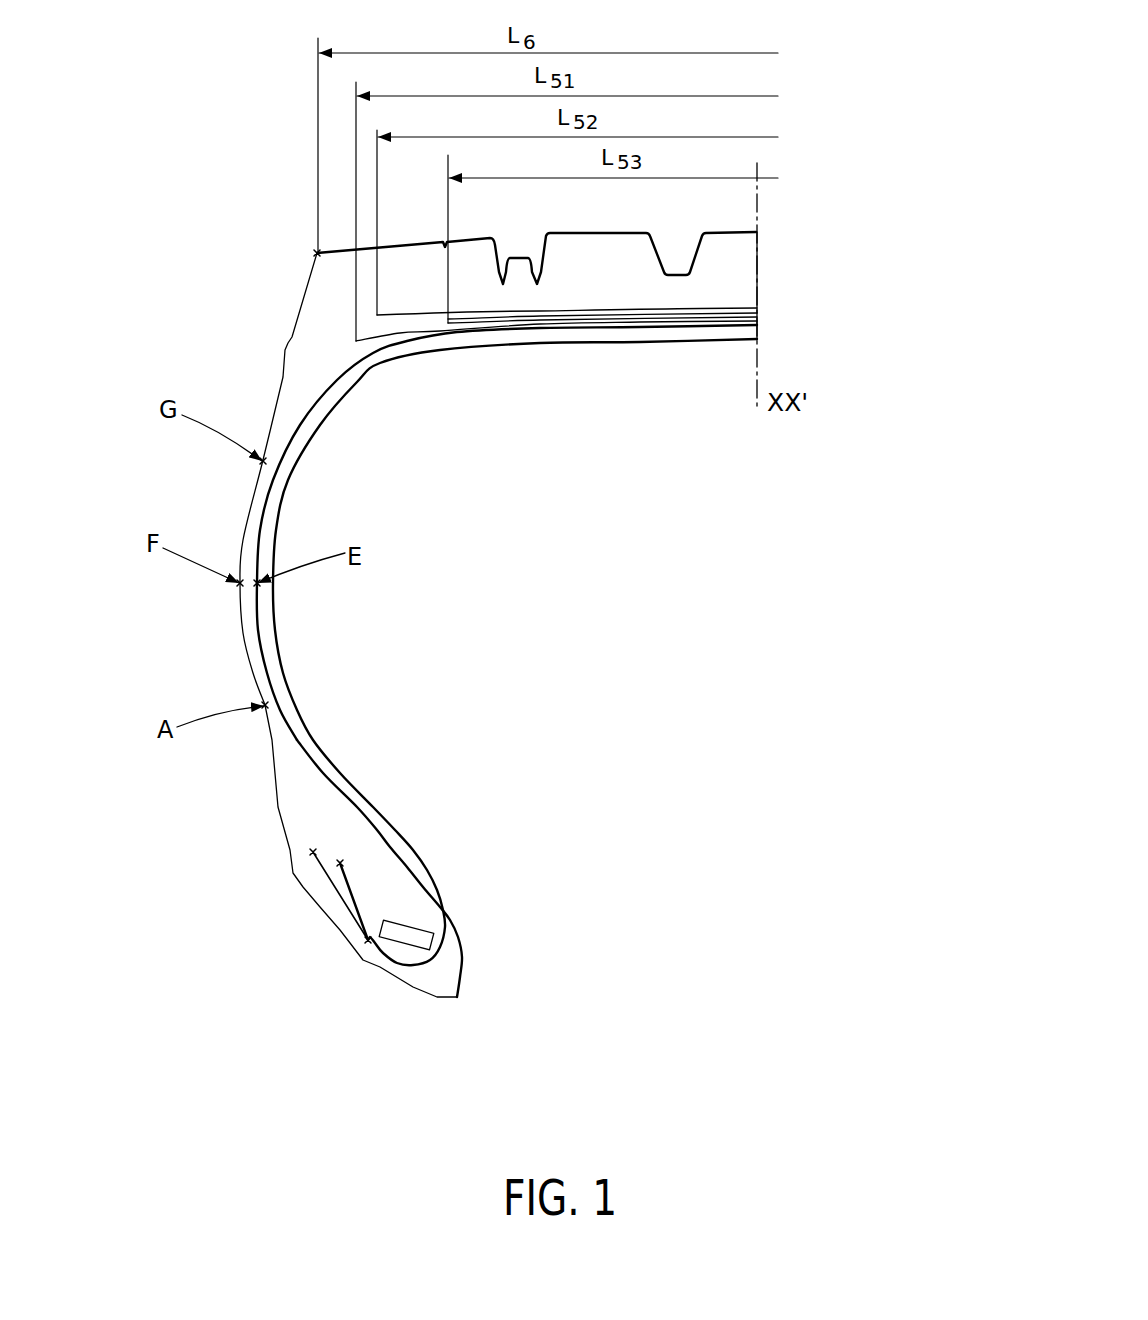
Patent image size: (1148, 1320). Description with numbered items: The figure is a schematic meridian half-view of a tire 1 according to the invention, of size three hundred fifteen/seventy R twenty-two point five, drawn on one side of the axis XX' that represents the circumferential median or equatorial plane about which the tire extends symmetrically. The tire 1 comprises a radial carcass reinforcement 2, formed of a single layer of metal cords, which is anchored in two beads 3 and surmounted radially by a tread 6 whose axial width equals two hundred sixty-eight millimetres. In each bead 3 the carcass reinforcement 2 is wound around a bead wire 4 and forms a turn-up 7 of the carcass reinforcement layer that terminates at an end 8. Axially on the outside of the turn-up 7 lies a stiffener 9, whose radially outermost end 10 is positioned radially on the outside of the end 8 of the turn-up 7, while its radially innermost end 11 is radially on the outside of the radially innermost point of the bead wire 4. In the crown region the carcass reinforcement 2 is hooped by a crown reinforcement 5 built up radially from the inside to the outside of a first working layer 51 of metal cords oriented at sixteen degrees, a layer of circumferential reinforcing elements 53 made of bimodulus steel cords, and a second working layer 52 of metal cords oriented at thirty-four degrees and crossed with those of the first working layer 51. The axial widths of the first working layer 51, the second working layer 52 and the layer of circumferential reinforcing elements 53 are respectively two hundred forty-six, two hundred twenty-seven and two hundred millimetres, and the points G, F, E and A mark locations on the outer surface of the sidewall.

The tire 1 is at (308, 353).
The carcass reinforcement 2 is at (458, 335).
The bead 3 is at (398, 889).
The bead wire 4 is at (432, 926).
The crown reinforcement 5 is at (573, 300).
The tread 6 is at (422, 270).
The turn-up 7 is at (358, 889).
The end of the turn-up 8 is at (343, 864).
The stiffener 9 is at (334, 893).
The radially outermost end of the stiffener 10 is at (313, 853).
The radially innermost end of the stiffener 11 is at (367, 946).
The first working layer 51 is at (738, 323).
The second working layer 52 is at (729, 305).
The layer of circumferential reinforcing elements 53 is at (751, 309).